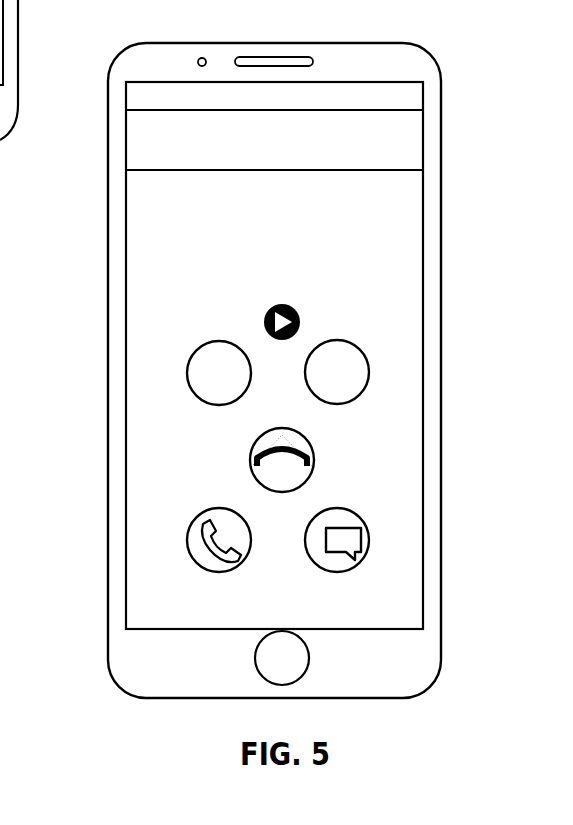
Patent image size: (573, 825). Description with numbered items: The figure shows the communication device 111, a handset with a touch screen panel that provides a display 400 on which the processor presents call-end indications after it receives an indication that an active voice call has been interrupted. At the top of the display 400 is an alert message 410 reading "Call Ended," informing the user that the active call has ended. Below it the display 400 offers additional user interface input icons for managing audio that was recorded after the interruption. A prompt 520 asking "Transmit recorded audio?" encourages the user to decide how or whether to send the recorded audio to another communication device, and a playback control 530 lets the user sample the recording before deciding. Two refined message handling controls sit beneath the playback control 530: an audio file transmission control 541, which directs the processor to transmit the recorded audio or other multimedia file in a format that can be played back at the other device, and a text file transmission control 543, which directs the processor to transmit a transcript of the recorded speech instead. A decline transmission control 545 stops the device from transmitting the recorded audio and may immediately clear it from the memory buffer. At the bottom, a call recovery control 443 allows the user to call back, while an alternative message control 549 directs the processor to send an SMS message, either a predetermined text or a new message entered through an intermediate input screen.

The communication device 111 is at (349, 43).
The display 400 is at (148, 83).
The alert message 410 is at (403, 126).
The prompt 520 is at (372, 252).
The playback control 530 is at (263, 320).
The audio file transmission control 541 is at (193, 350).
The text file transmission control 543 is at (368, 352).
The decline transmission control 545 is at (251, 468).
The call recovery control 443 is at (192, 523).
The alternative message control 549 is at (373, 532).